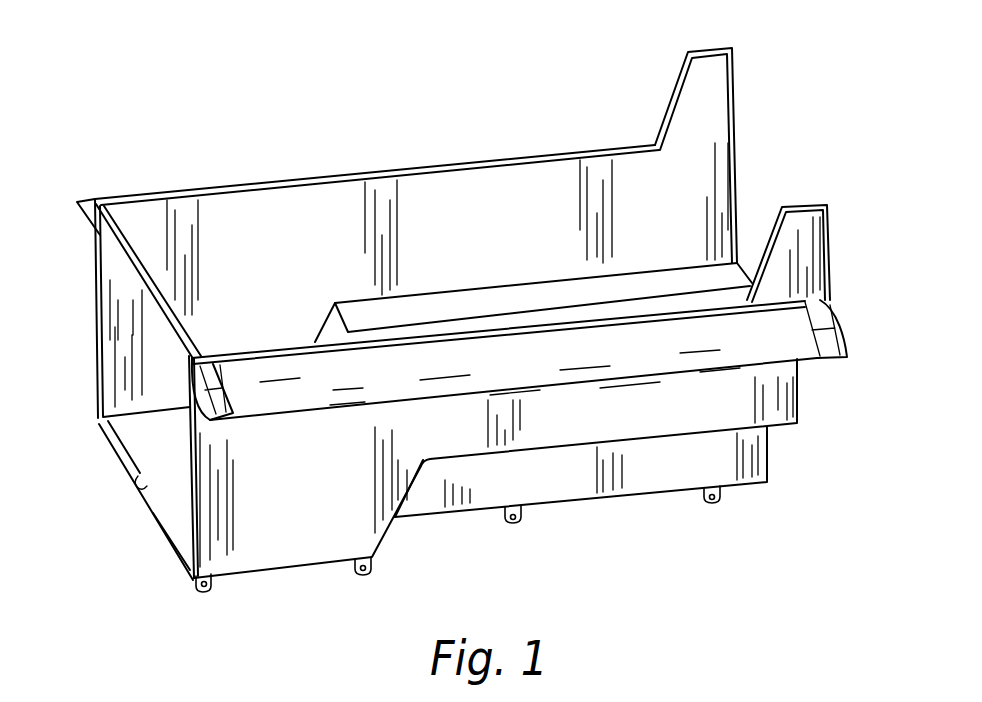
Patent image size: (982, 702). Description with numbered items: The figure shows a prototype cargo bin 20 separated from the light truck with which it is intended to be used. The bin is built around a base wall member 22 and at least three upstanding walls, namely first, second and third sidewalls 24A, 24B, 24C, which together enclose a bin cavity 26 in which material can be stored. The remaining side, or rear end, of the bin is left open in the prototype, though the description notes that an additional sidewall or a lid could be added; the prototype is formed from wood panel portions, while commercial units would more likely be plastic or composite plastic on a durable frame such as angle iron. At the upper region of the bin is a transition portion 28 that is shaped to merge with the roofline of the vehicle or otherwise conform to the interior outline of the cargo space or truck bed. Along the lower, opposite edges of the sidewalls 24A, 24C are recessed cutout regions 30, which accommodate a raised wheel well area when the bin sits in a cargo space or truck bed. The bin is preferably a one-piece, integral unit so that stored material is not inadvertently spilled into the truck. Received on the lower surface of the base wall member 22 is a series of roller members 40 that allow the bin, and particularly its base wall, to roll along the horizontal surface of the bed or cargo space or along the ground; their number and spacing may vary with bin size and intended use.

The cargo bin 20 is at (201, 146).
The base wall member 22 is at (166, 452).
The first sidewall 24A is at (408, 165).
The second sidewall 24B is at (148, 296).
The third sidewall 24C is at (332, 378).
The bin cavity 26 is at (479, 220).
The transition portion 28 is at (706, 90).
The recessed cutout region 30 is at (333, 323).
The roller members 40 is at (172, 547).